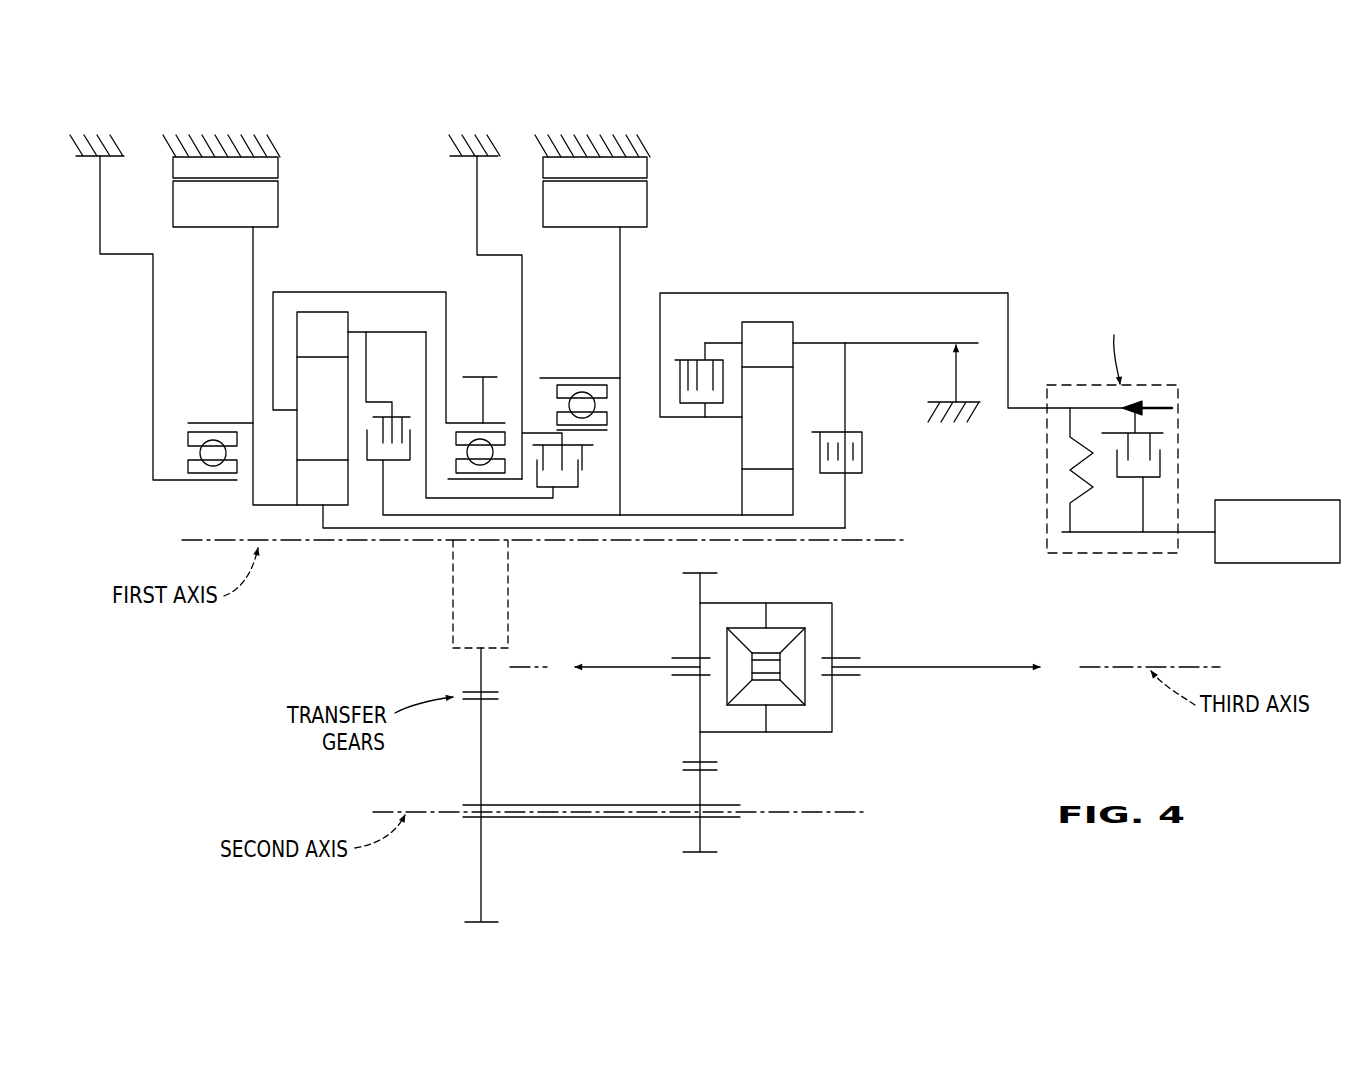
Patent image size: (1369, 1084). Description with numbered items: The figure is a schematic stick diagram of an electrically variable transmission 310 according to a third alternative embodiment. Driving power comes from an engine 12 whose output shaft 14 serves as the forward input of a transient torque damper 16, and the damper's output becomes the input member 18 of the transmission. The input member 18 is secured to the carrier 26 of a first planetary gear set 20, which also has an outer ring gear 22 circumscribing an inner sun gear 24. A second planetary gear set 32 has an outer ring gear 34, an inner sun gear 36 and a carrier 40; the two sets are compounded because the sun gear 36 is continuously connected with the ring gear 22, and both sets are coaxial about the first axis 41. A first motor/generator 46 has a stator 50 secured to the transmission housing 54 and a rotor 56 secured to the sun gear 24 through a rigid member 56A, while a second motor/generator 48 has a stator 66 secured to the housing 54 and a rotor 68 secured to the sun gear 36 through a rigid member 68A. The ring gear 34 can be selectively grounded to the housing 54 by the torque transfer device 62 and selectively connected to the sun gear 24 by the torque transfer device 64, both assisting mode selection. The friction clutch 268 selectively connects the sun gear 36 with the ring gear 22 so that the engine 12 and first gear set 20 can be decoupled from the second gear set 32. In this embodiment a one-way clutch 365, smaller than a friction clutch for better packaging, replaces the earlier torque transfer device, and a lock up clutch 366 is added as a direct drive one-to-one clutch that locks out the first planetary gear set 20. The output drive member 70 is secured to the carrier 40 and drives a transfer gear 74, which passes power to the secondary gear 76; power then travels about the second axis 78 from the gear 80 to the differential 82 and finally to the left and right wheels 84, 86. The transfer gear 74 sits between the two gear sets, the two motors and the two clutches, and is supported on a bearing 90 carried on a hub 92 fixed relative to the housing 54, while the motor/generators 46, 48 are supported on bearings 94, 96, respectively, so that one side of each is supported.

The engine 12 is at (1289, 502).
The output shaft 14 is at (1191, 569).
The transient torque damper 16 is at (1151, 430).
The input member 18 is at (1016, 439).
The first planetary gear set 20 is at (841, 378).
The outer ring gear 22 is at (841, 292).
The inner sun gear 24 is at (768, 553).
The carrier 26 is at (932, 380).
The second planetary gear set 32 is at (322, 368).
The outer ring gear 34 is at (386, 281).
The inner sun gear 36 is at (566, 549).
The carrier 40 is at (354, 368).
The first axis 41 is at (543, 566).
The first motor/generator 46 is at (613, 192).
The second motor/generator 48 is at (243, 192).
The stator 50 is at (569, 173).
The transmission housing 54 is at (370, 122).
The rotor 56 is at (569, 204).
The rigid member 56A is at (654, 371).
The torque transfer device 62 is at (569, 519).
The torque transfer device 64 is at (554, 462).
The stator 66 is at (198, 173).
The rotor 68 is at (198, 204).
The rigid member 68A is at (234, 366).
The output drive member 70 is at (477, 364).
The transfer gear 74 is at (480, 359).
The secondary gear 76 is at (460, 785).
The second axis 78 is at (601, 777).
The gear 80 is at (727, 712).
The differential 82 is at (766, 699).
The left wheel 84 is at (605, 667).
The right wheel 86 is at (1026, 647).
The bearing 90 is at (467, 512).
The hub 92 is at (528, 317).
The bearing 94 is at (601, 423).
The bearing 96 is at (191, 475).
The friction clutch 268 is at (898, 435).
The transmission 310 is at (57, 541).
The one-way clutch 365 is at (944, 378).
The lock up clutch 366 is at (702, 329).